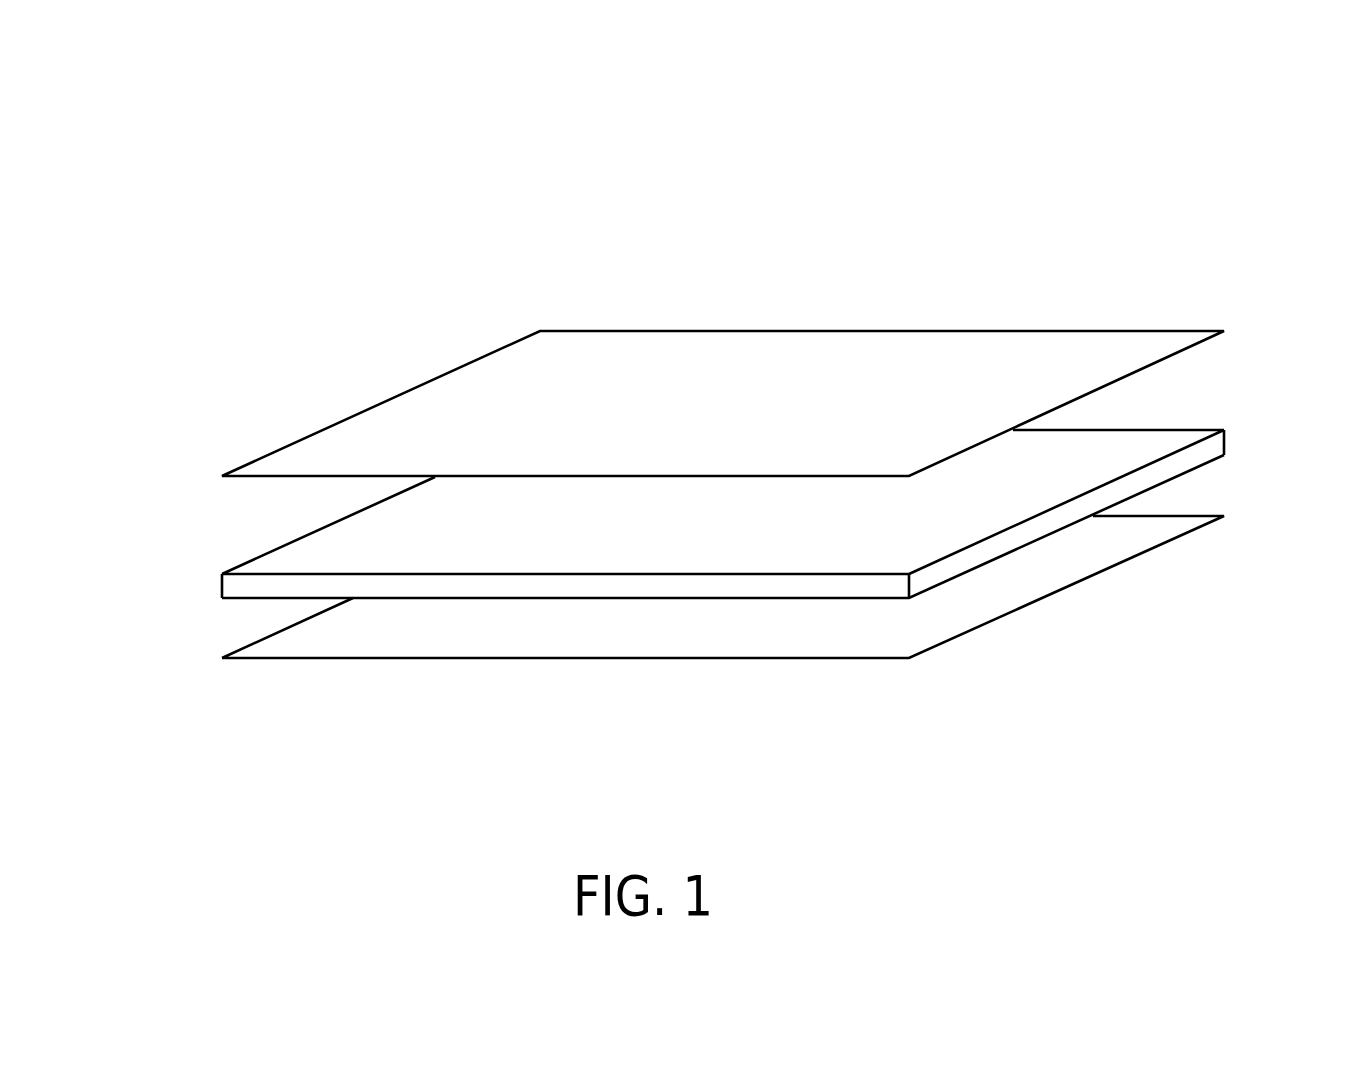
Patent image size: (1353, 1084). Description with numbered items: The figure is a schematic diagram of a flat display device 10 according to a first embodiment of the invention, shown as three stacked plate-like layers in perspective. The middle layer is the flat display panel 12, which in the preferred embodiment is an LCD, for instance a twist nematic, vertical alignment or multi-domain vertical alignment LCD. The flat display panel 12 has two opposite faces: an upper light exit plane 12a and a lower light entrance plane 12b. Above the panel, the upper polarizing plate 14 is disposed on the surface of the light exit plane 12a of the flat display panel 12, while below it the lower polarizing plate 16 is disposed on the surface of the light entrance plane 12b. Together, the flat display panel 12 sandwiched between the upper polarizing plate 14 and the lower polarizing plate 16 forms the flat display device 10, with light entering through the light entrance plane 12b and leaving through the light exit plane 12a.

The flat display device 10 is at (1090, 223).
The flat display panel 12 is at (1225, 442).
The light exit plane 12a is at (290, 565).
The light entrance plane 12b is at (240, 600).
The upper polarizing plate 14 is at (1110, 348).
The lower polarizing plate 16 is at (1110, 548).